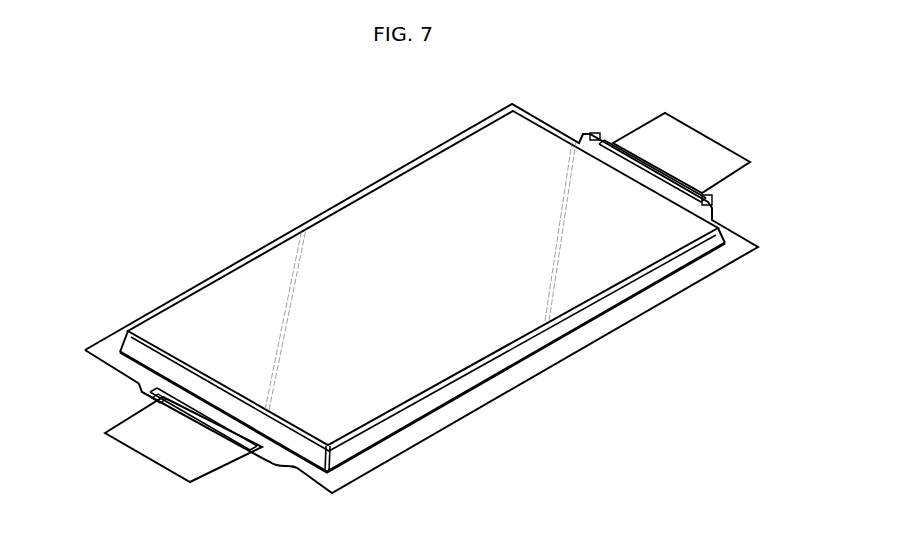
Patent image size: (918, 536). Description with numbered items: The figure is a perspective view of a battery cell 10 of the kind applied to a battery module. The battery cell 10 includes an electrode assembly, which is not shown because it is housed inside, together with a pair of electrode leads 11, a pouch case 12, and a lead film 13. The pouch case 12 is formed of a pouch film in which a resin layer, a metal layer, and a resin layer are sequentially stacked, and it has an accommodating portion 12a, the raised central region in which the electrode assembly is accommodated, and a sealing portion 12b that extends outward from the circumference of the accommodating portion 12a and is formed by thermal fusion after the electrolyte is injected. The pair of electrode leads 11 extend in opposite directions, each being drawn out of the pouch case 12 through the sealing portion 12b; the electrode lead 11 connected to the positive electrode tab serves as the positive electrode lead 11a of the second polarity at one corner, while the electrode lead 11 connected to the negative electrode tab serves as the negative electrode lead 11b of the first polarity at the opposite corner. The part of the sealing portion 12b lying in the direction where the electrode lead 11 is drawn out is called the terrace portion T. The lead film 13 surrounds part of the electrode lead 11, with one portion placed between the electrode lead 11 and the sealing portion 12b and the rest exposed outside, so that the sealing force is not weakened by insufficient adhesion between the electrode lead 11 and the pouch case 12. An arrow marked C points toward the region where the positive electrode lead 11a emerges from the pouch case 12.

The battery cell 10 is at (397, 302).
The electrode lead 11 is at (397, 283).
The positive electrode lead 11a is at (155, 443).
The negative electrode lead 11b is at (692, 145).
The pouch case 12 is at (421, 312).
The accommodating portion 12a is at (602, 428).
The sealing portion 12b is at (421, 312).
The lead film 13 is at (247, 458).
The terrace portion T is at (302, 470).
The corner / cutting direction C is at (133, 398).